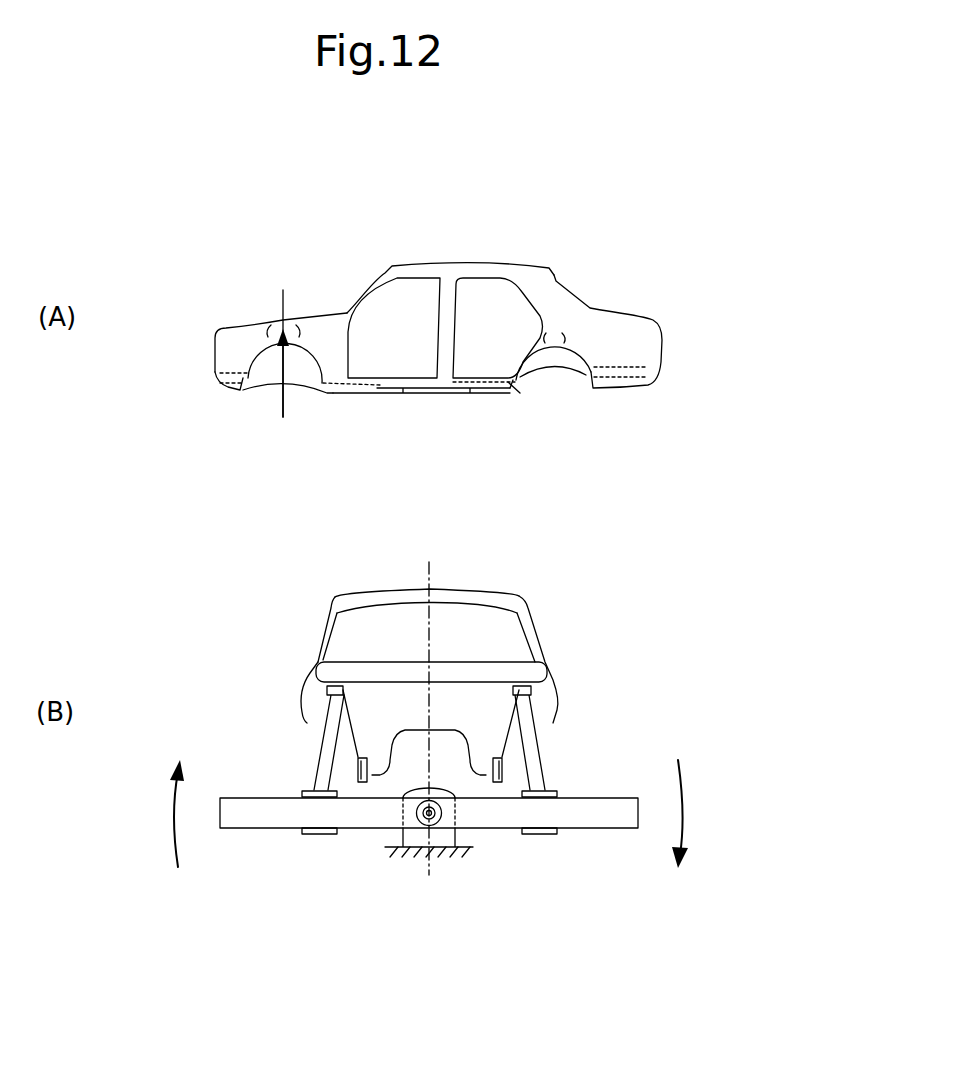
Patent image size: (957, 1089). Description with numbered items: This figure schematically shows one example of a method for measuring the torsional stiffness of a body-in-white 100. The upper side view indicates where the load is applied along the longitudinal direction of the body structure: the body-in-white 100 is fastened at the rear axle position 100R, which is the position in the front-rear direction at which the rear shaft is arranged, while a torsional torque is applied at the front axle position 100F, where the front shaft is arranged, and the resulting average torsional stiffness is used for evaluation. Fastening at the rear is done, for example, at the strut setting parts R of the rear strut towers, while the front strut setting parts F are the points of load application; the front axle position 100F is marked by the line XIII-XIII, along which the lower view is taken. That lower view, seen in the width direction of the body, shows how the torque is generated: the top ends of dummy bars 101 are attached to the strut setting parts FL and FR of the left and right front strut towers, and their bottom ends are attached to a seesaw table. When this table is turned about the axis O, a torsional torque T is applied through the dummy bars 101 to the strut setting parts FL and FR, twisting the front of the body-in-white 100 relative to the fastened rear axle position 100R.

The body-in-white 100 is at (436, 485).
The front axle position 100F is at (291, 312).
The rear axle position 100R is at (561, 270).
The dummy bars 101 is at (323, 757).
The strut setting parts of the front strut towers F is at (351, 553).
The strut setting part of the left front strut tower FL is at (517, 702).
The strut setting part of the right front strut tower FR is at (326, 699).
The strut setting parts of the rear strut towers R is at (573, 337).
The torsional torque T is at (172, 812).
The axis O is at (436, 818).
The line XIII- XIII is at (268, 415).